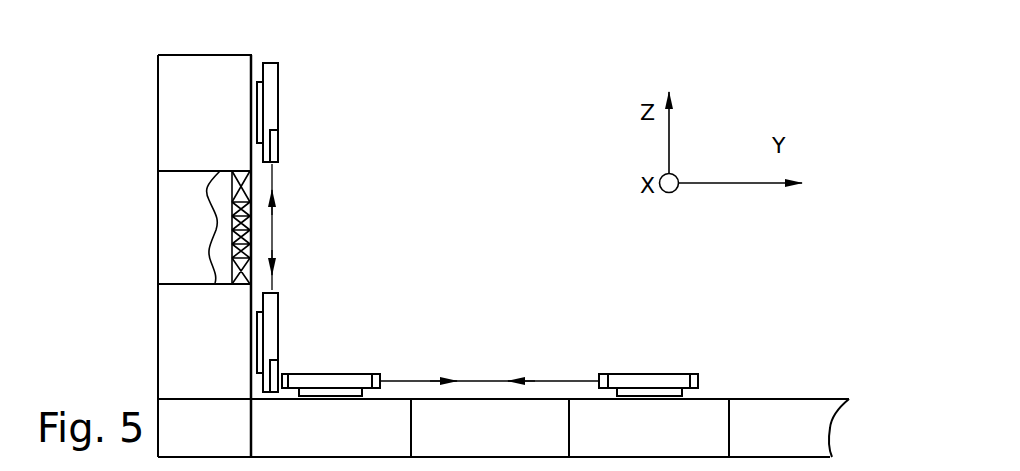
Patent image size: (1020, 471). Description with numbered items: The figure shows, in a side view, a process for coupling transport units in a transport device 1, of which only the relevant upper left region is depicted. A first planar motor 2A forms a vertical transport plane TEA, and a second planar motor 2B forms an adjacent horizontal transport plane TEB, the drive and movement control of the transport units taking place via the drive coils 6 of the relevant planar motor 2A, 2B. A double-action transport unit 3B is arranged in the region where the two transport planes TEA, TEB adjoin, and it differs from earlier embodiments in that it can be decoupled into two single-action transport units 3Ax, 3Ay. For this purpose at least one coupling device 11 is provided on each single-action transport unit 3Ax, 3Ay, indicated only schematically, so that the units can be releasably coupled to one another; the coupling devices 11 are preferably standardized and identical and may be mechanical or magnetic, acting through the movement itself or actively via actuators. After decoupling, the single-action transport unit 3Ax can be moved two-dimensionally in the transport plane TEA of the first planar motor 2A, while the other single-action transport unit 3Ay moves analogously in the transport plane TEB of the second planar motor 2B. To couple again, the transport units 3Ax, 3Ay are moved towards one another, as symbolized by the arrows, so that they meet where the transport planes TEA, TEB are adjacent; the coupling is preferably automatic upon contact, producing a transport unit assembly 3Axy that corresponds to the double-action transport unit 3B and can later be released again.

The transport device 1 is at (137, 72).
The transport plane TEA is at (257, 55).
The first planar motor 2A is at (180, 200).
The drive coils 6 is at (251, 228).
The single-action transport unit 3Ax is at (270, 90).
The transport unit assembly 3Axy is at (303, 355).
The double-action transport unit 3B is at (370, 363).
The single-action transport unit 3Ay is at (649, 365).
The coupling device 11 is at (275, 148).
The transport plane TEB is at (762, 398).
The second planar motor 2B is at (782, 427).